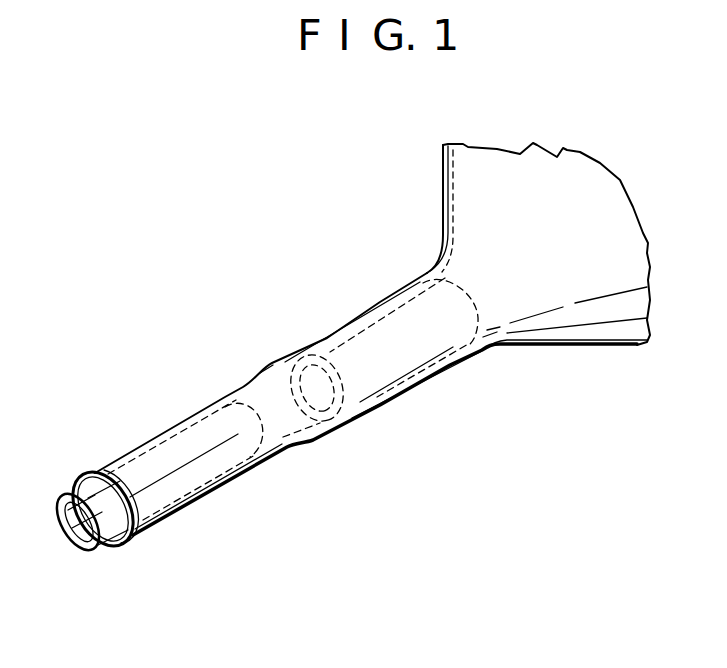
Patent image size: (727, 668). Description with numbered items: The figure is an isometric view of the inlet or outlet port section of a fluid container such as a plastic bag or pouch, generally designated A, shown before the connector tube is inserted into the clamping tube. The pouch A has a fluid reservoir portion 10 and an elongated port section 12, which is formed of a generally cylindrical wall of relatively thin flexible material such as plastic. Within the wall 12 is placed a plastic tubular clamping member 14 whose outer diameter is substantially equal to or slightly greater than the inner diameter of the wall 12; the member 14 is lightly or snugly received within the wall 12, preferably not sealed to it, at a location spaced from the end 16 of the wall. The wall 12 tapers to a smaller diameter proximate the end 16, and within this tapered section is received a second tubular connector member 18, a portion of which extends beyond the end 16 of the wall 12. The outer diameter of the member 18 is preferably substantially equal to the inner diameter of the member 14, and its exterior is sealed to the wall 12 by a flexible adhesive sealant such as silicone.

The fluid reservoir portion 10 is at (570, 167).
The elongated port section 12 is at (270, 363).
The tubular clamping member 14 is at (380, 407).
The end 16 is at (64, 533).
The tubular connector member 18 is at (66, 492).
The pouch A is at (558, 346).